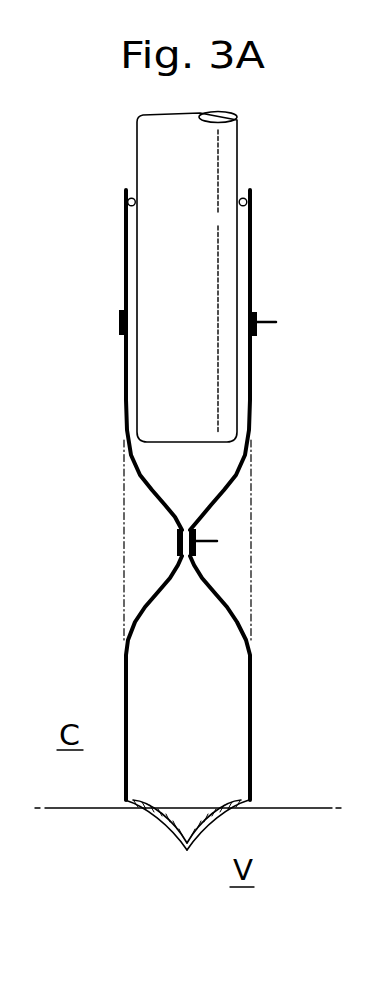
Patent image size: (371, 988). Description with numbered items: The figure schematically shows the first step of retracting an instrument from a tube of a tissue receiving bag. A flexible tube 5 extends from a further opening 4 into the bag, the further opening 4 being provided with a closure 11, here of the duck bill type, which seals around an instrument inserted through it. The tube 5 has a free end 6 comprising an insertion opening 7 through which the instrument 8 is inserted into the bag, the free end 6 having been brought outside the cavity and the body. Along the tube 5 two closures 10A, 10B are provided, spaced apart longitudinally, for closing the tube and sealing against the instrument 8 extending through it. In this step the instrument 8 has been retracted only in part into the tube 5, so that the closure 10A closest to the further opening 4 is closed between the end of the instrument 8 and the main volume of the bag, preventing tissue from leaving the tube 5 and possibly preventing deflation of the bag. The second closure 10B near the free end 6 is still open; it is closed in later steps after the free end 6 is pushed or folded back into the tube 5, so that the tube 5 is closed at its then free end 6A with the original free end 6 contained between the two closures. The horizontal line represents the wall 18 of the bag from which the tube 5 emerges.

The further opening 4 is at (127, 840).
The flexible tube 5 is at (217, 700).
The free end 6 is at (250, 192).
The then free end 6A is at (123, 230).
The insertion opening 7 is at (129, 176).
The instrument 8 is at (197, 264).
The closure 10A is at (177, 539).
The closure 10B is at (119, 320).
The closure 11 is at (182, 848).
The wall 18 is at (300, 808).